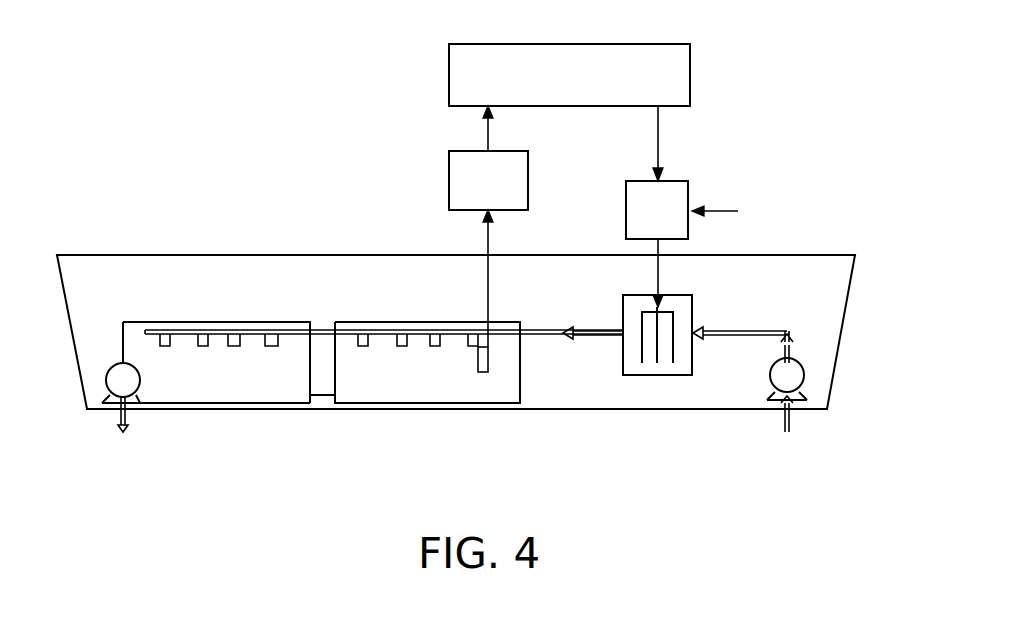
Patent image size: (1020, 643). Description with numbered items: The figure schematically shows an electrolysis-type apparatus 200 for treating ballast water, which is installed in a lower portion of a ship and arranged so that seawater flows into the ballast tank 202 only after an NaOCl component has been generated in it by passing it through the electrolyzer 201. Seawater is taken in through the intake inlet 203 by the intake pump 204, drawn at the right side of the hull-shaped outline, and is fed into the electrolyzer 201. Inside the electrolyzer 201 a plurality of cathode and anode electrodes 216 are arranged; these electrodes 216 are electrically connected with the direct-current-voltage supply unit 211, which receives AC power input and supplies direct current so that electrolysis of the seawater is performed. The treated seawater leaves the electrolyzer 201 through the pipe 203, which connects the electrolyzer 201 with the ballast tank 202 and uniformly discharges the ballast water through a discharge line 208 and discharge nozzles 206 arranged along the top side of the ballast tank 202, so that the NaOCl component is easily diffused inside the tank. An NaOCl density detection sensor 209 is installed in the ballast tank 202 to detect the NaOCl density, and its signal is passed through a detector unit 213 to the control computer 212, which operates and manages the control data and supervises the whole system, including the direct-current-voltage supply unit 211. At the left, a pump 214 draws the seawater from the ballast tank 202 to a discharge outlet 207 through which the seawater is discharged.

The electrolysis-type apparatus for treating ballast water 200 is at (192, 155).
The electrolyzer 201 is at (681, 375).
The ballast tank 202 is at (347, 388).
The pipe 203 is at (590, 334).
The intake pump 204 is at (810, 400).
The discharge nozzle 206 is at (205, 346).
The discharge outlet 207 is at (127, 418).
The discharge line 208 is at (287, 330).
The NaOCl density detection sensor 209 is at (488, 372).
The direct-current-voltage supply unit 211 is at (688, 181).
The control computer 212 is at (449, 78).
The detector 213 is at (449, 178).
The drain pump 214 is at (123, 363).
The electrodes 216 is at (641, 355).